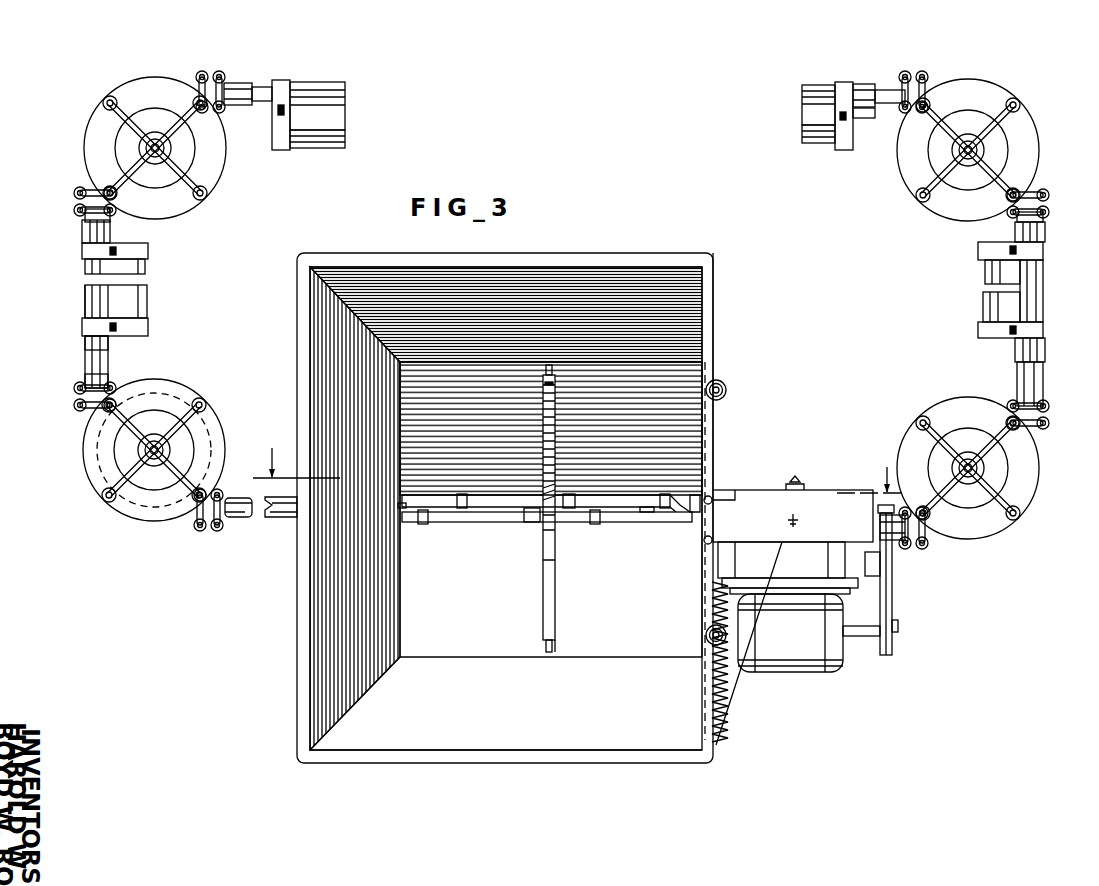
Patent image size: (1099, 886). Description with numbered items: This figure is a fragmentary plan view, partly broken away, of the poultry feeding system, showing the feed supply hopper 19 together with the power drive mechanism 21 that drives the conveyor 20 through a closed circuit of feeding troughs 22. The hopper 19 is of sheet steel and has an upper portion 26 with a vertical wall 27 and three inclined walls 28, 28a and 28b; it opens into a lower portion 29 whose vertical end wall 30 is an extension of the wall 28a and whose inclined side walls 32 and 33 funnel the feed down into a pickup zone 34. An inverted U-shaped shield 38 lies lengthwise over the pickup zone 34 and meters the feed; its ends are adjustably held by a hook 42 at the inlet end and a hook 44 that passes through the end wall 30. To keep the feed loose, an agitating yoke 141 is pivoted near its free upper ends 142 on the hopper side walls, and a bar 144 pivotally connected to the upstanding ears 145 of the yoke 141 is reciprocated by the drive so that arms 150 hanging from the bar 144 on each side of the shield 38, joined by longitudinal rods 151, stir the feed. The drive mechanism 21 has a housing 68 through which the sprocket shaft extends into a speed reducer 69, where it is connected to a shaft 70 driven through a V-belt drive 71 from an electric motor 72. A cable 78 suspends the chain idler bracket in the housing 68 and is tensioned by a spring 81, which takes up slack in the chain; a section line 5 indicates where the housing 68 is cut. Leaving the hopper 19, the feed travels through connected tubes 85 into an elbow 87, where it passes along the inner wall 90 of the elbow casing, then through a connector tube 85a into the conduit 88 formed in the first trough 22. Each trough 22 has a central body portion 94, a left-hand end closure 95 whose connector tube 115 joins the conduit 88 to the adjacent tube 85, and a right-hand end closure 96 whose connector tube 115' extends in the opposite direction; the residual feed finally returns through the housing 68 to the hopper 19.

The section line 5 is at (578, 458).
The feed supply hopper 19 is at (714, 302).
The conveyor 20 is at (263, 523).
The power drive mechanism 21 is at (892, 613).
The feeding trough 22 is at (348, 117).
The upper portion 26 is at (338, 717).
The vertical wall 27 is at (705, 382).
The inclined wall 28 is at (455, 730).
The inclined wall 28a is at (370, 618).
The inclined wall 28b is at (578, 248).
The lower portion 29 is at (600, 638).
The vertical end wall 30 is at (395, 588).
The inclined side wall 32 is at (698, 403).
The inclined side wall 33 is at (633, 622).
The pickup zone 34 is at (627, 525).
The shield 38 is at (648, 515).
The hook 42 is at (690, 517).
The hook 44 is at (400, 503).
The housing 68 is at (793, 509).
The speed reducer 69 is at (788, 568).
The shaft 70 is at (870, 565).
The V-belt drive 71 is at (883, 652).
The electric motor 72 is at (790, 633).
The cable 78 is at (750, 637).
The spring 81 is at (718, 690).
The tube 85 is at (238, 104).
The connector tube 85a is at (100, 372).
The elbow 87 is at (77, 150).
The conduit 88 is at (84, 305).
The inner wall 90 is at (143, 530).
The central body portion 94 is at (330, 142).
The left-hand end closure 95 is at (285, 142).
The right-hand end closure 96 is at (148, 250).
The connector tube 115 is at (565, 221).
The connector tube 115' is at (563, 236).
The yoke 141 is at (548, 588).
The free upper ends 142 is at (553, 640).
The bar 144 is at (488, 508).
The upstanding ears 145 is at (532, 513).
The arms 150 is at (462, 495).
The longitudinal rods 151 is at (622, 497).